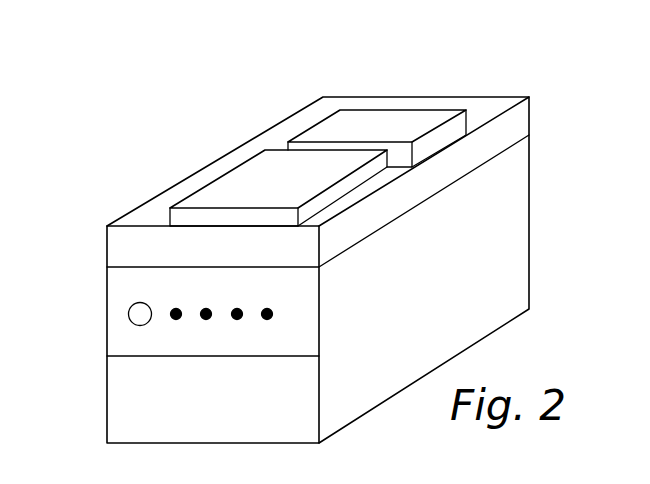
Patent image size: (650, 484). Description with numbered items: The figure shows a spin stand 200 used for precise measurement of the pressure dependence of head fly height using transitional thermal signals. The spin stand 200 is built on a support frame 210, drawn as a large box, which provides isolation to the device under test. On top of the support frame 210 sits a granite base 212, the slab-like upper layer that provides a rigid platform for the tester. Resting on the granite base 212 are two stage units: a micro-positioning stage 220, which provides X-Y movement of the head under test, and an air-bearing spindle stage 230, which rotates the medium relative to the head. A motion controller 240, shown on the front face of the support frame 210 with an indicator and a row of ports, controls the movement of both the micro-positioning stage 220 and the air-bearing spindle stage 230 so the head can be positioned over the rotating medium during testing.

The spin stand 200 is at (246, 73).
The support frame 210 is at (517, 229).
The granite base 212 is at (522, 124).
The micro-positioning stage 220 is at (389, 135).
The air-bearing spindle stage 230 is at (296, 187).
The motion controller 240 is at (107, 322).